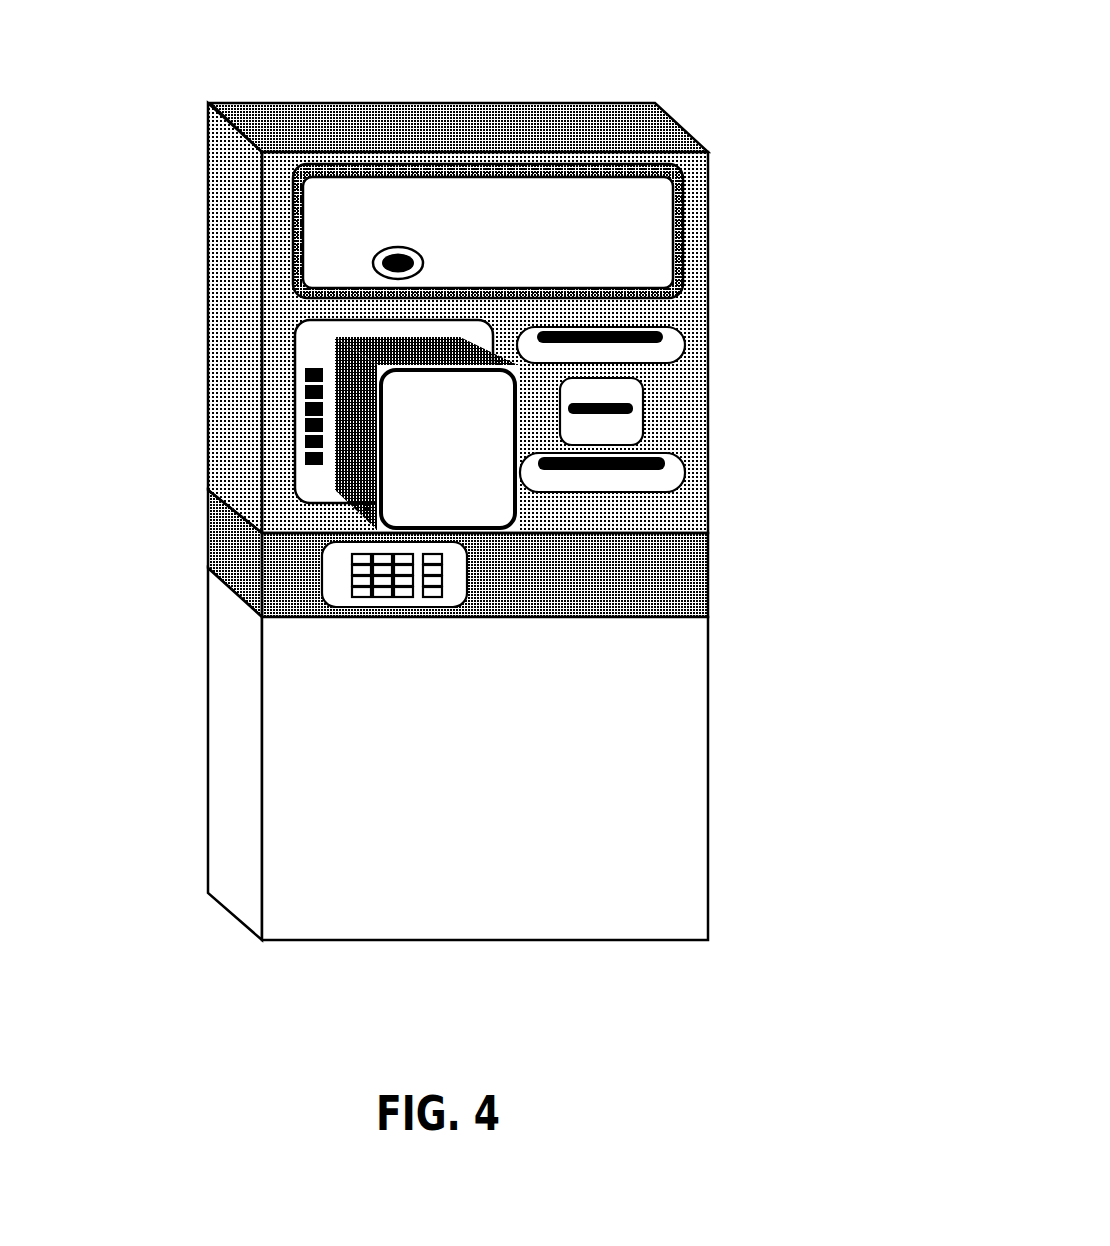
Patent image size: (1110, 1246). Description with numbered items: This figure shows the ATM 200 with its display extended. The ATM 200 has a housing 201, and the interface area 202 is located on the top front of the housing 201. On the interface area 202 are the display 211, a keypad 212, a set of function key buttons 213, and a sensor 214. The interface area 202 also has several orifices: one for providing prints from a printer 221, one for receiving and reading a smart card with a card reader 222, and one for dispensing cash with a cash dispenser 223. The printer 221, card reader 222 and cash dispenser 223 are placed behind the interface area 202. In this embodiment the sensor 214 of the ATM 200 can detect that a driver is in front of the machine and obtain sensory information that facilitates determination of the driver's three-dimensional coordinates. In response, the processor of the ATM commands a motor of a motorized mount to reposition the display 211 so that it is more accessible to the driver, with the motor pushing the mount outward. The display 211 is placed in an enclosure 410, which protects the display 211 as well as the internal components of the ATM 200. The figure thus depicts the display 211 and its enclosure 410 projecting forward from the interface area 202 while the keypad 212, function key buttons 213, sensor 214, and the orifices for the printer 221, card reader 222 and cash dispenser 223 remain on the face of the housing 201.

The ATM 200 is at (702, 124).
The housing 201 is at (620, 917).
The interface area 202 is at (273, 183).
The display 211 is at (473, 497).
The keypad 212 is at (392, 602).
The function key buttons 213 is at (305, 393).
The sensor 214 is at (345, 268).
The printer 221 is at (697, 327).
The card reader 222 is at (683, 402).
The cash dispenser 223 is at (693, 473).
The enclosure 410 is at (330, 488).